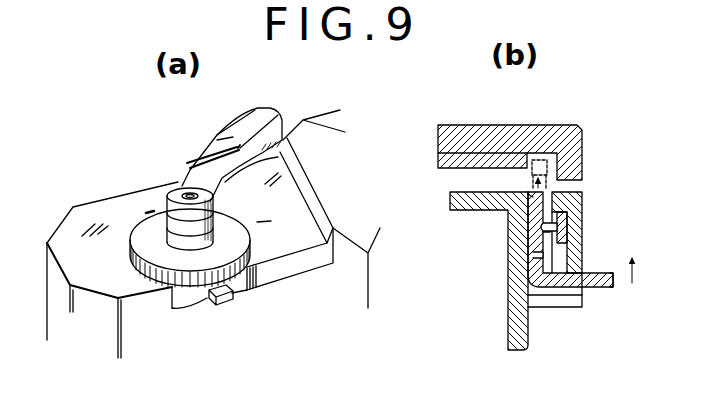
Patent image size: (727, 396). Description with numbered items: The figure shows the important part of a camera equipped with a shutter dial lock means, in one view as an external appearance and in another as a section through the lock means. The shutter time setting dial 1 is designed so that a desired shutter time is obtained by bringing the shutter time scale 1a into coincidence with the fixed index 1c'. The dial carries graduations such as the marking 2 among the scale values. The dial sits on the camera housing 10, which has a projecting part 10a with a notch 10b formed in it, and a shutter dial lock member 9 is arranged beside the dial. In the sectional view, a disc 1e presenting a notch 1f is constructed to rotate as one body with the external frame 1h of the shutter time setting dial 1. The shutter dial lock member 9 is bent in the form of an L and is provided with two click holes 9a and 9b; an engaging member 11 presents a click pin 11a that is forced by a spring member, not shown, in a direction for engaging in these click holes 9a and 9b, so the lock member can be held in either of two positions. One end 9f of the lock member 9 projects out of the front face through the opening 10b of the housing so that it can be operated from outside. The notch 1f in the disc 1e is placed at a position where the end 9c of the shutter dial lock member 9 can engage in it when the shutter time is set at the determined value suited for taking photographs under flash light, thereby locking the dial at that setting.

The shutter time setting dial 1 is at (130, 223).
The shutter time scale 1a is at (244, 221).
The fixed index 1c' is at (286, 264).
The disc 1e is at (505, 160).
The notch 1f is at (554, 163).
The external frame 1h is at (160, 208).
The dial 2 is at (190, 248).
The shutter dial lock member 9 is at (233, 297).
The click hole 9a is at (532, 228).
The click hole 9b is at (532, 255).
The end of shutter dial lock member 9c is at (533, 197).
The end of shutter dial lock member 9f is at (225, 305).
The camera housing 10 is at (133, 310).
The projecting part 10a is at (183, 300).
The notch 10b is at (208, 313).
The engaging member 11 is at (566, 240).
The click pin 11a is at (558, 228).